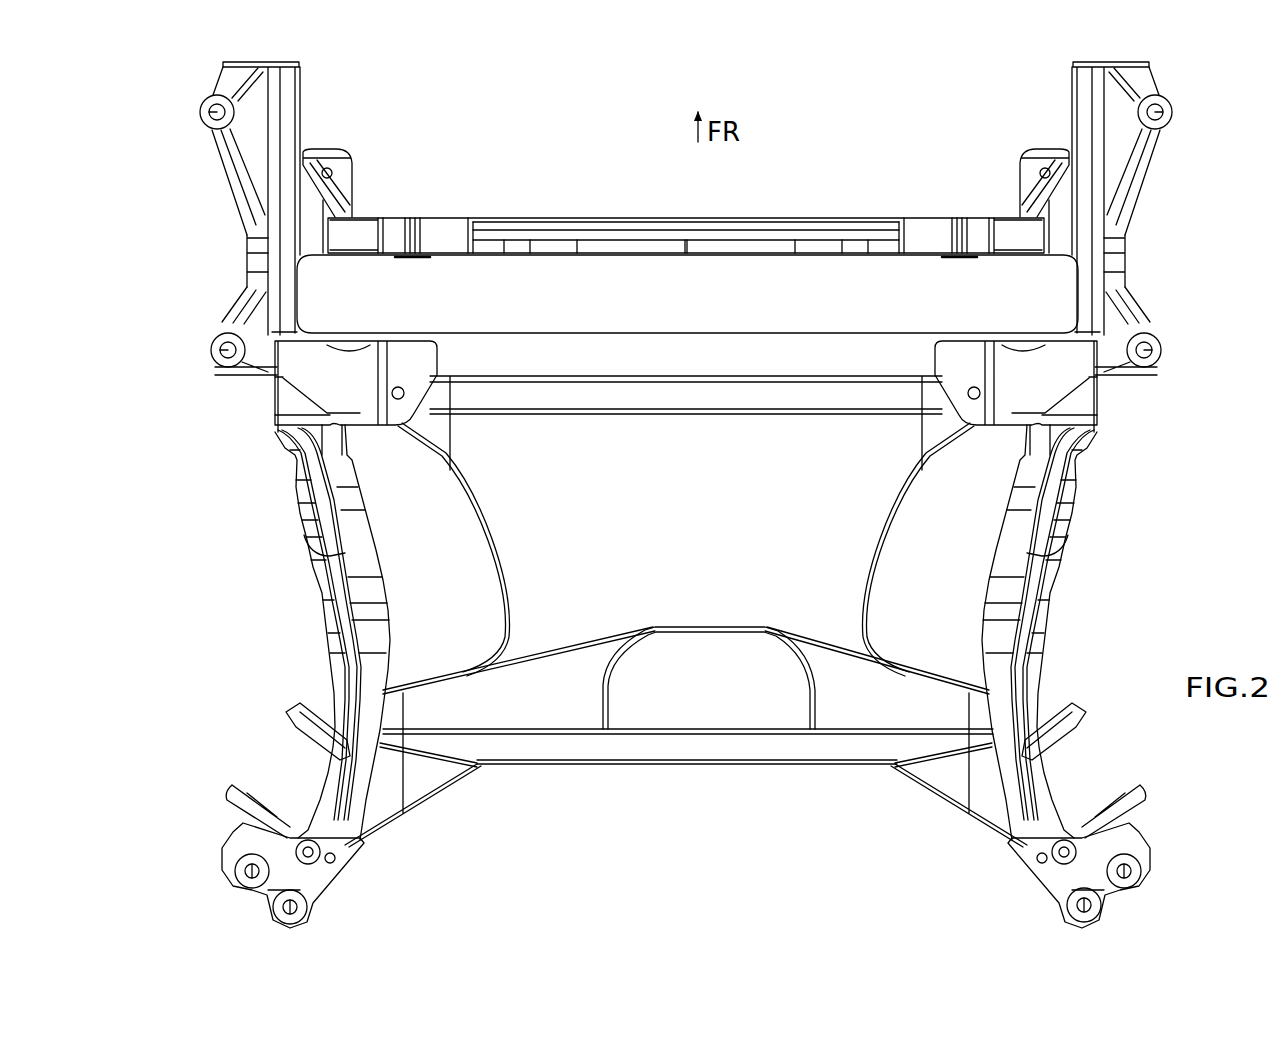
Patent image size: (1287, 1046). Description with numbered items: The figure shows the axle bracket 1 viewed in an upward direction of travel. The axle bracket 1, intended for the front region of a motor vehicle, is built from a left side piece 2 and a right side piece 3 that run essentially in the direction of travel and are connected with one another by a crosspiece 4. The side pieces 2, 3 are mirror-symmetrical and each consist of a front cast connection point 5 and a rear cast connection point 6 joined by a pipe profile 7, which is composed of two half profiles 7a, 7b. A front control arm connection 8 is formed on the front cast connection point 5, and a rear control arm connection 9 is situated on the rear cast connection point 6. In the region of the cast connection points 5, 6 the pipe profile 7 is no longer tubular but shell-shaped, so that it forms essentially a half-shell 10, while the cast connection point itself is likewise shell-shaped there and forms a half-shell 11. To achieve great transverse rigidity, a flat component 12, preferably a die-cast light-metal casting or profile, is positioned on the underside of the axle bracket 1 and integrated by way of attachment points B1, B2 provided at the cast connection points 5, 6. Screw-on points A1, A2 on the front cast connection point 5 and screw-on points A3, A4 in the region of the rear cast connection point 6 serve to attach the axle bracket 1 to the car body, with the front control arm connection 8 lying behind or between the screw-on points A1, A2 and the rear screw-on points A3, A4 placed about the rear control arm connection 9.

The axle bracket 1 is at (475, 112).
The left side piece 2 is at (303, 546).
The right side piece 3 is at (1065, 578).
The crosspiece 4 is at (612, 232).
The front cast connection point 5 is at (260, 244).
The rear cast connection point 6 is at (1118, 892).
The pipe profile 7 is at (305, 590).
The half profile 7a is at (300, 488).
The half profile 7b is at (370, 572).
The front control arm connection 8 is at (268, 400).
The rear control arm connection 9 is at (275, 762).
The half-shell 10 is at (357, 808).
The half-shell 11 is at (340, 843).
The flat component 12 is at (575, 700).
The screw-on point A1 is at (204, 101).
The screw-on point A2 is at (213, 340).
The screw-on point A3 is at (250, 871).
The screw-on point A4 is at (290, 907).
The attachment point B1 is at (398, 404).
The attachment point B2 is at (333, 862).